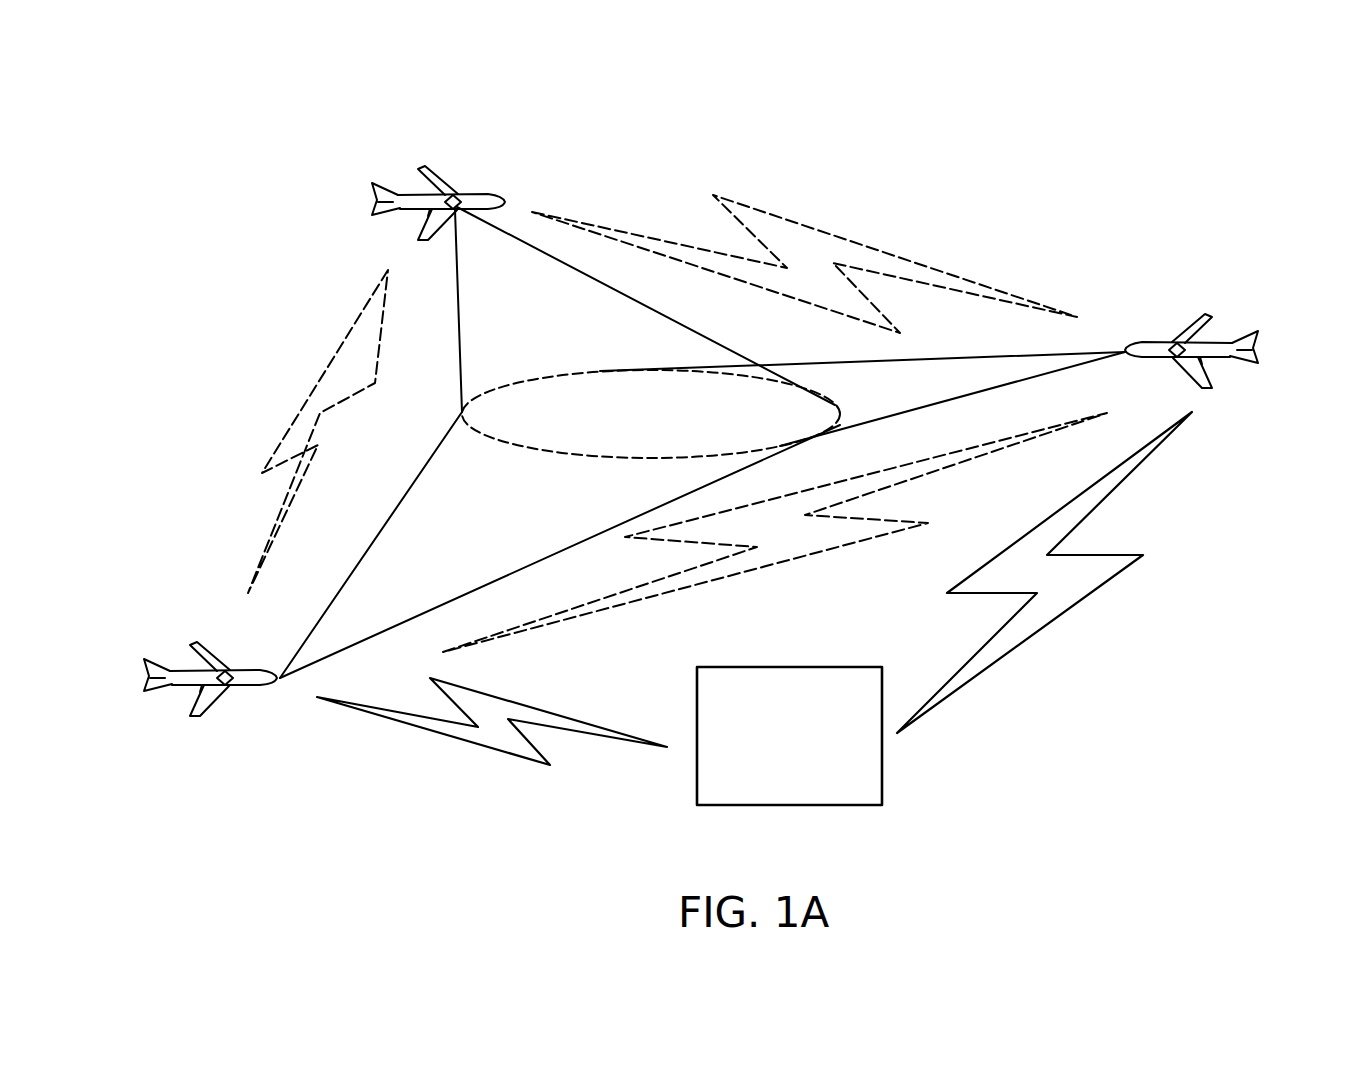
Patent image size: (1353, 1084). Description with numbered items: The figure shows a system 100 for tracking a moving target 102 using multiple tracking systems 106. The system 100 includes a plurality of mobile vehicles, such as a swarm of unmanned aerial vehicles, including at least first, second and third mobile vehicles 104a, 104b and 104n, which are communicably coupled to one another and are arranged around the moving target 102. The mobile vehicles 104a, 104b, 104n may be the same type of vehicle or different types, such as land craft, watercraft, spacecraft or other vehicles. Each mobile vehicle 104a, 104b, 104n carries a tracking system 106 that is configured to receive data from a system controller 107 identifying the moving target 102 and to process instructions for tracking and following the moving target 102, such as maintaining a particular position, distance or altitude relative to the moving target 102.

The system 100 is at (1103, 162).
The moving target 102 is at (738, 429).
The first mobile vehicle 104a is at (186, 695).
The second mobile vehicle 104b is at (1216, 367).
The third mobile vehicle 104n is at (418, 240).
The tracking system 106 is at (456, 195).
The system controller 107 is at (797, 667).